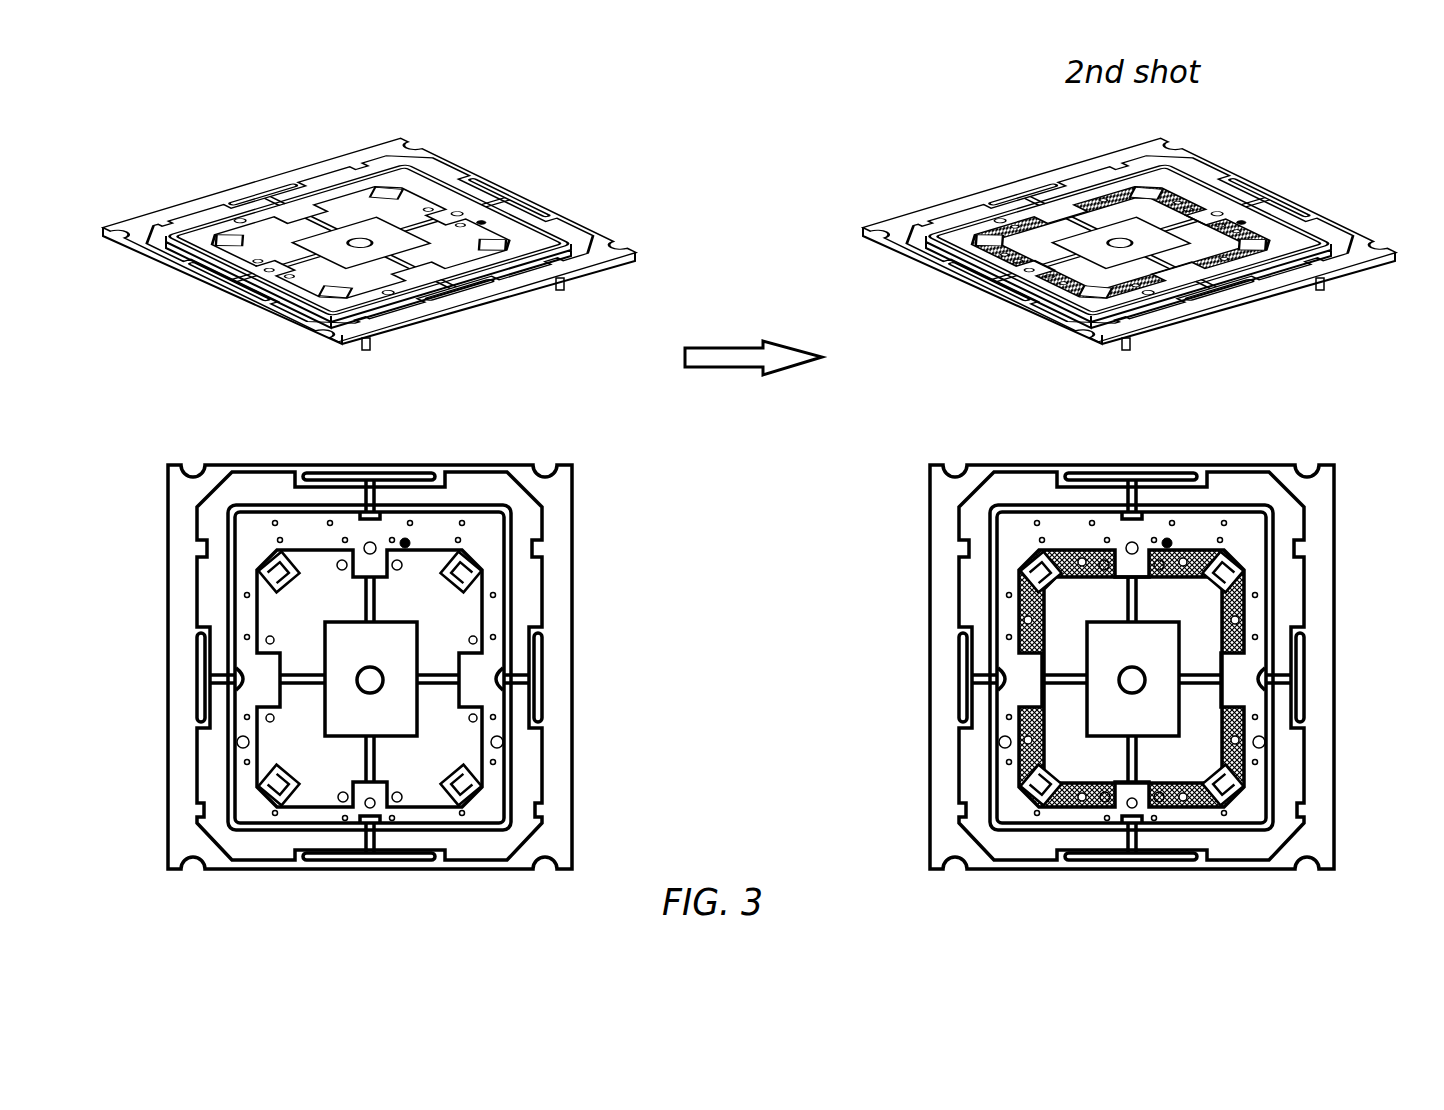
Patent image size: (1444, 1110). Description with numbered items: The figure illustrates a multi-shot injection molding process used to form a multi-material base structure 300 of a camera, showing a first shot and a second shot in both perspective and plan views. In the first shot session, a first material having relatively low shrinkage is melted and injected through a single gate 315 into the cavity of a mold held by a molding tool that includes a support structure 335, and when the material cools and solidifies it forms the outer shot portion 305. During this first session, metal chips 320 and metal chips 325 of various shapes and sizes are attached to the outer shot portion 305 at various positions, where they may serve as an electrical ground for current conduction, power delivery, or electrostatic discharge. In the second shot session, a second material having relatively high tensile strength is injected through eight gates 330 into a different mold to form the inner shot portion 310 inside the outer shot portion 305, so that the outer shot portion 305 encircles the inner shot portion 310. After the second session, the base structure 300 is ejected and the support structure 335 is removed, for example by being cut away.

The base structure 300 is at (88, 52).
The outer shot portion 305 is at (1067, 208).
The inner shot portion 310 is at (1272, 134).
The gate 315 is at (1312, 180).
The metal chips 320 is at (253, 553).
The metal chips 325 is at (475, 640).
The gates 330 is at (1042, 124).
The support structure 335 is at (170, 580).